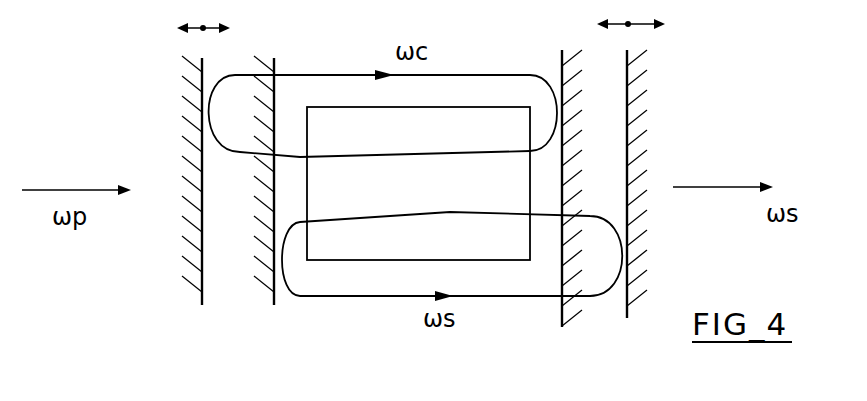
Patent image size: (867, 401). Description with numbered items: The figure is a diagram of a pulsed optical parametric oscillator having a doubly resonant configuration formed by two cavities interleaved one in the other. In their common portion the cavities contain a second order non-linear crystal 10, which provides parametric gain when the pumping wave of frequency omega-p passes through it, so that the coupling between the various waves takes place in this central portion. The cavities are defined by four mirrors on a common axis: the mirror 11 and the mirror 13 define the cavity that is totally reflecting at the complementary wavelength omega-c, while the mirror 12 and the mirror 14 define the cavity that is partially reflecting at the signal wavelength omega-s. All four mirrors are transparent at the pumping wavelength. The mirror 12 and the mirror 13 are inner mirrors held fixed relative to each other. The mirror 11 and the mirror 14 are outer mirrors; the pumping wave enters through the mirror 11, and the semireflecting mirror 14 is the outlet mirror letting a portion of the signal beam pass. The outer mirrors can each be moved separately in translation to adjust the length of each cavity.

The second order non-linear crystal 10 is at (430, 196).
The mirror 11 is at (203, 294).
The mirror 12 is at (275, 300).
The mirror 13 is at (561, 310).
The mirror 14 is at (627, 302).